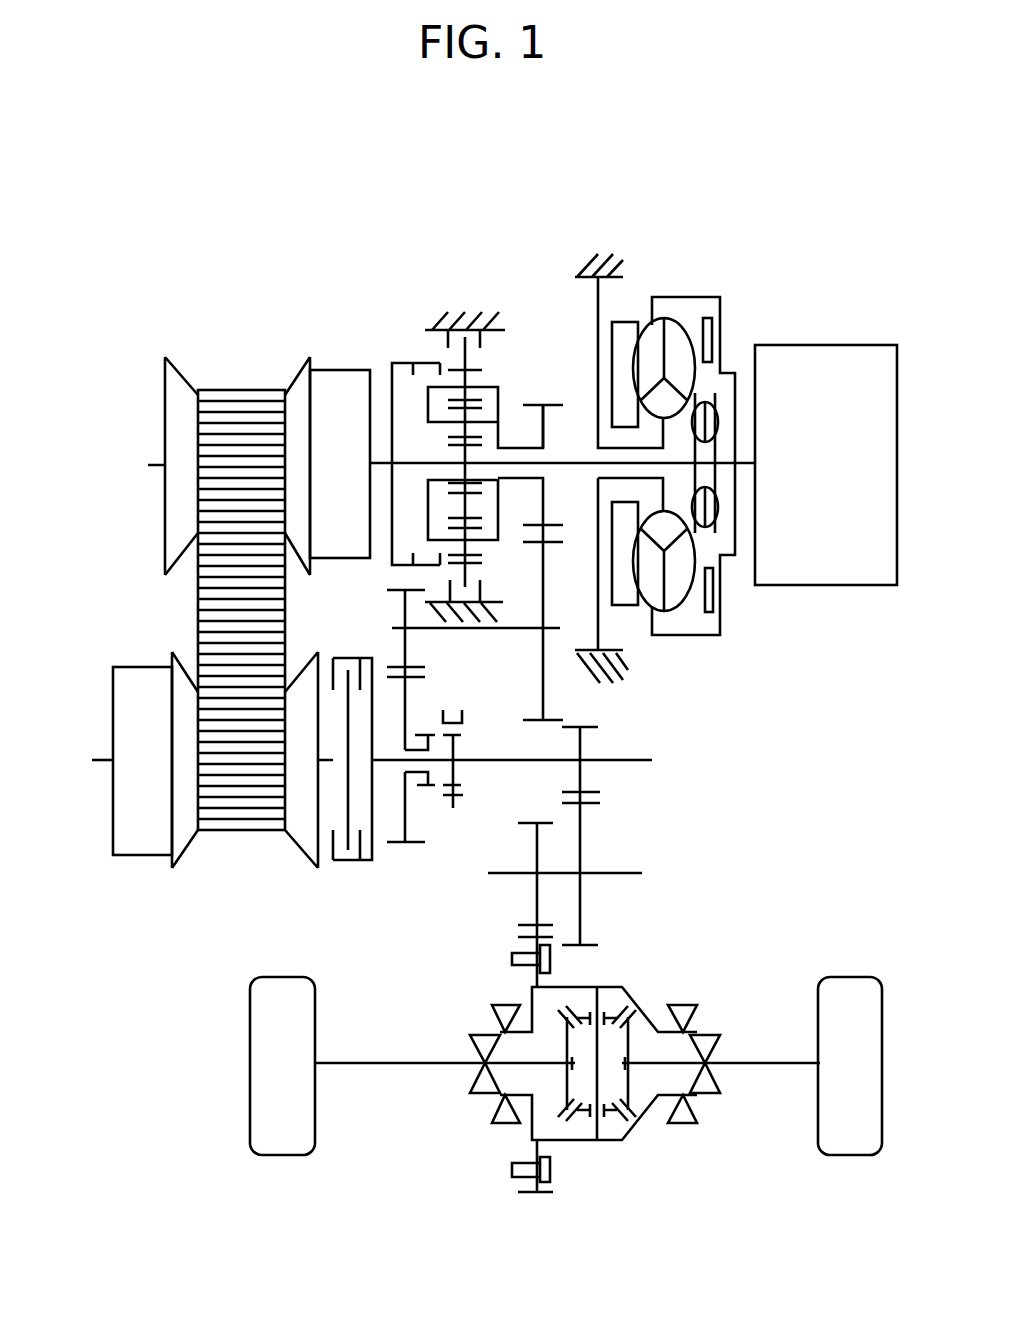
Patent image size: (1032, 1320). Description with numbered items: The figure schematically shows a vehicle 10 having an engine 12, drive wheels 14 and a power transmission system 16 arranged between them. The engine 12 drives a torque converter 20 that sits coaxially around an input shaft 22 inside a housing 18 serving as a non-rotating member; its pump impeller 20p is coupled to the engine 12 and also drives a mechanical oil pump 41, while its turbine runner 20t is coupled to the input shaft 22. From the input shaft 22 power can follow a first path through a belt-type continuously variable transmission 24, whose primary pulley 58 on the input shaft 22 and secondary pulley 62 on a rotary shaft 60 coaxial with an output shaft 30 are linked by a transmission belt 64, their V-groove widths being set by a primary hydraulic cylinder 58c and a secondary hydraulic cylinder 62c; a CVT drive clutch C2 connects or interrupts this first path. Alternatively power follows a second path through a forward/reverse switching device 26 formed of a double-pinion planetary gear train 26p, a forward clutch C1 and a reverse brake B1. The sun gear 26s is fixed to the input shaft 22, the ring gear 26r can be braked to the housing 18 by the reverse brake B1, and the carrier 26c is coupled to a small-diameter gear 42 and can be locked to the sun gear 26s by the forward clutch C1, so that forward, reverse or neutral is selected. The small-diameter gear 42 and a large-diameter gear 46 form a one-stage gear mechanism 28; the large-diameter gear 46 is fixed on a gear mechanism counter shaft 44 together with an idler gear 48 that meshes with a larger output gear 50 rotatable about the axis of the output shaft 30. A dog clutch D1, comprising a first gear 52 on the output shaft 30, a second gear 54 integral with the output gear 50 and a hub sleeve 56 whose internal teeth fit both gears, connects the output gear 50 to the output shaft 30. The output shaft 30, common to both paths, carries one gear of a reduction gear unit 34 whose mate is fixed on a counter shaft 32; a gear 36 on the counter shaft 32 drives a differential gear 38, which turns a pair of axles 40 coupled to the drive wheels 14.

The vehicle 10 is at (787, 192).
The engine 12 is at (815, 355).
The drive wheels 14 is at (284, 988).
The power transmission system 16 is at (668, 238).
The housing 18 is at (458, 312).
The torque converter 20 is at (672, 276).
The pump impeller 20p is at (649, 332).
The turbine runner 20t is at (695, 334).
The input shaft 22 is at (568, 460).
The continuously variable transmission 24 is at (226, 336).
The forward/reverse switching device 26 is at (396, 328).
The carrier 26c is at (426, 413).
The sun gear 26s is at (452, 480).
The ring gear 26r is at (470, 363).
The planetary gear train 26p is at (482, 572).
The gear mechanism 28 is at (565, 536).
The output shaft 30 is at (624, 758).
The counter shaft 32 is at (633, 873).
The reduction gear unit 34 is at (614, 796).
The gear 36 is at (523, 822).
The differential gear 38 is at (620, 972).
The axles 40 is at (412, 1063).
The oil pump 41 is at (620, 324).
The small-diameter gear 42 is at (538, 398).
The gear mechanism counter shaft 44 is at (549, 628).
The large-diameter gear 46 is at (562, 722).
The idler gear 48 is at (392, 672).
The output gear 50 is at (390, 845).
The first gear 52 is at (462, 786).
The second gear 54 is at (420, 787).
The hub sleeve 56 is at (452, 800).
The primary pulley 58 is at (118, 466).
The primary hydraulic cylinder 58c is at (346, 380).
The rotary shaft 60 is at (98, 762).
The secondary pulley 62 is at (82, 727).
The secondary hydraulic cylinder 62c is at (142, 848).
The transmission belt 64 is at (244, 832).
The forward clutch C1 is at (429, 346).
The reverse brake B1 is at (498, 346).
The CVT drive clutch C2 is at (352, 776).
The dog clutch D1 is at (453, 706).